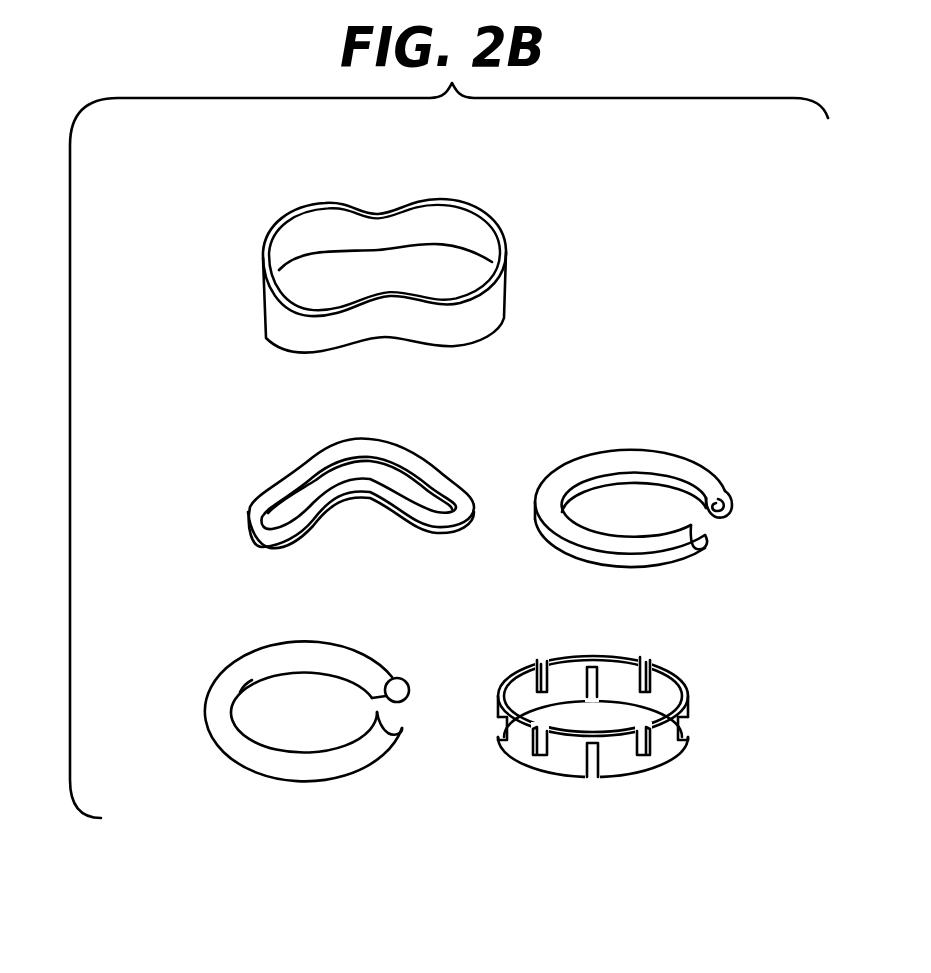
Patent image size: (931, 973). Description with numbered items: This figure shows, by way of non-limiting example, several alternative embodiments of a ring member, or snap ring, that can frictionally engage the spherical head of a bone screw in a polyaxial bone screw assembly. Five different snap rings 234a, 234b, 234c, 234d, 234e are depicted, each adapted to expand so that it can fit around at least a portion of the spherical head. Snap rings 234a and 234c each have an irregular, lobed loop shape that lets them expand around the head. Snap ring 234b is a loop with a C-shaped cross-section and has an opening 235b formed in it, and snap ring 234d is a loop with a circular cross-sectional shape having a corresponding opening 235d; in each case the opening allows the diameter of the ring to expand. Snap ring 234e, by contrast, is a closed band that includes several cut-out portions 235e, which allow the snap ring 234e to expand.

The snap ring 234a is at (520, 216).
The snap ring 234b is at (693, 494).
The snap ring 234c is at (273, 450).
The snap ring 234d is at (287, 690).
The snap ring 234e is at (663, 748).
The opening 235b is at (724, 540).
The opening 235d is at (412, 714).
The cut-out portions 235e is at (593, 789).